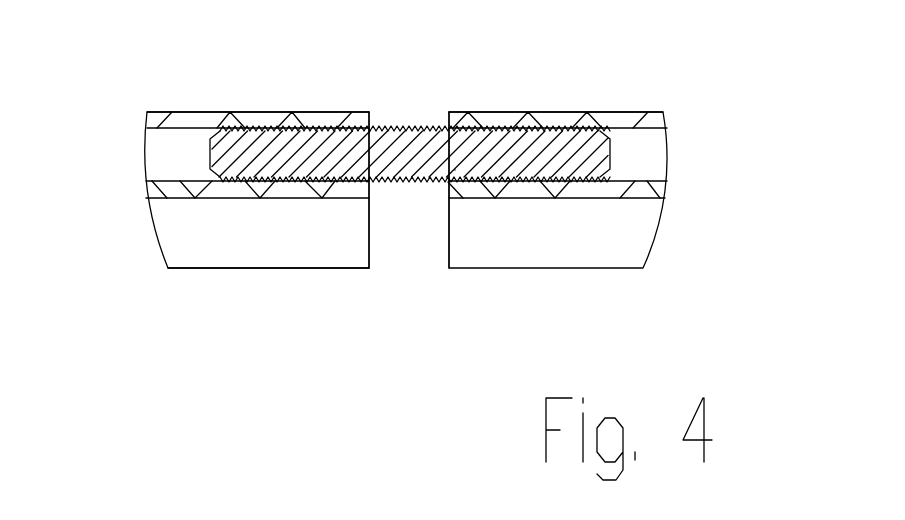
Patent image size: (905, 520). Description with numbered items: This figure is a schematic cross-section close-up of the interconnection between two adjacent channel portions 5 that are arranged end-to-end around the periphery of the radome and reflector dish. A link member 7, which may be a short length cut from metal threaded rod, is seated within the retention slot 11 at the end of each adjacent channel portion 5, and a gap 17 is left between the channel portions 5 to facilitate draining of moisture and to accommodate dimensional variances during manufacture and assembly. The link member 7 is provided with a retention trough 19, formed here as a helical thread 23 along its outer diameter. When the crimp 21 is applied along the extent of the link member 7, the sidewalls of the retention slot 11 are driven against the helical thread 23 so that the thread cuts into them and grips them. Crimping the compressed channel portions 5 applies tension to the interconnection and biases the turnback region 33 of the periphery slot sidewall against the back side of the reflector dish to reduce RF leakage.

The channel portion 5 is at (180, 222).
The link member 7 is at (413, 145).
The retention slot 11 is at (637, 152).
The gap 17 is at (410, 233).
The retention trough 19 is at (510, 182).
The crimp 21 is at (335, 128).
The helical thread 23 is at (530, 150).
The turnback region 33 is at (222, 262).